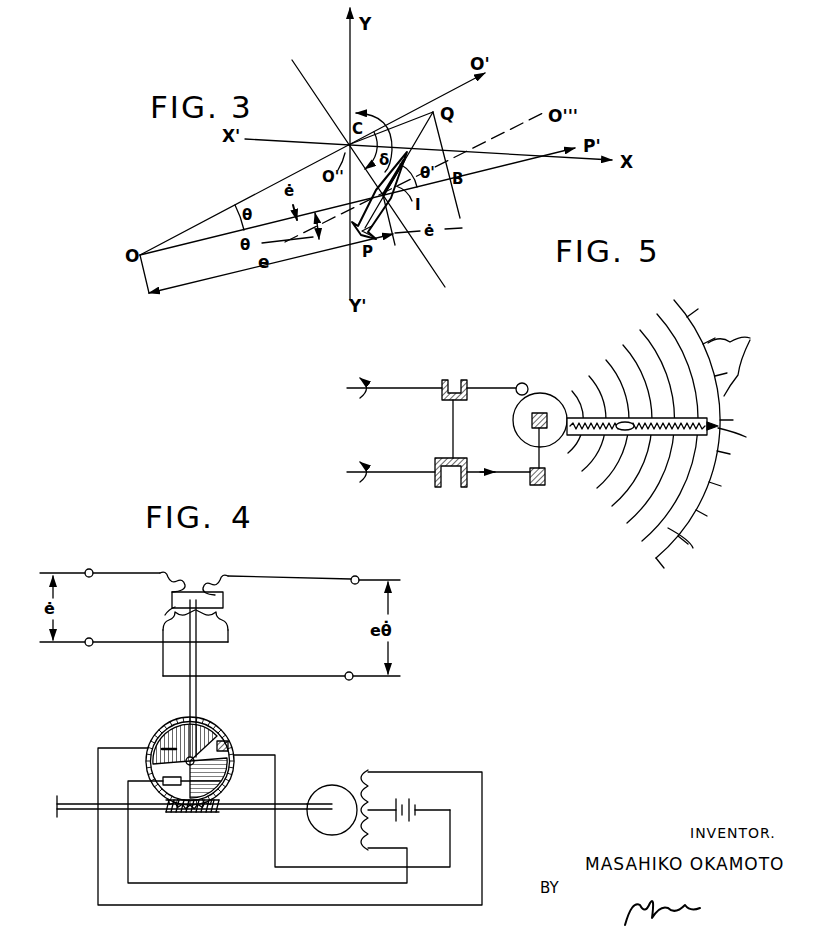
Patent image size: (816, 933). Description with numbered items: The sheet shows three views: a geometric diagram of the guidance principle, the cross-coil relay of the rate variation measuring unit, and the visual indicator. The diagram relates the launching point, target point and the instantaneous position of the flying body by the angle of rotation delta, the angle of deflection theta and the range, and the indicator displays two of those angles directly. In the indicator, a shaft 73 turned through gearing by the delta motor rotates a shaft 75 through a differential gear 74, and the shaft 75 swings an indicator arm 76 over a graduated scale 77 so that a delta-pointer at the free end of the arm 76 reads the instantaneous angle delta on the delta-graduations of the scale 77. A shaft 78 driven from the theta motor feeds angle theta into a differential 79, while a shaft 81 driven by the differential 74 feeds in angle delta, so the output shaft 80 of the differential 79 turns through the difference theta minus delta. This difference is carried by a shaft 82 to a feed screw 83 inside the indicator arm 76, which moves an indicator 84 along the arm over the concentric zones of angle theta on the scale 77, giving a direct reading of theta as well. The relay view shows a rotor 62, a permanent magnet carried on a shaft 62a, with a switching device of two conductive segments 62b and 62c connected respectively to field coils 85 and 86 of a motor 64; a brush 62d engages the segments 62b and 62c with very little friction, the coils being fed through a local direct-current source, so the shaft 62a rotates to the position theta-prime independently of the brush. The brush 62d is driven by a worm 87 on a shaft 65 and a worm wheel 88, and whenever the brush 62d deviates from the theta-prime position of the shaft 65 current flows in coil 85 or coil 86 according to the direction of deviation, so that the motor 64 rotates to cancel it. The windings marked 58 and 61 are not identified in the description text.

In FIG. 4, the coil 58 is at (168, 614).
In FIG. 4, the coil 61 is at (230, 622).
In FIG. 4, the rotor 62 is at (223, 605).
In FIG. 4, the shaft 62a is at (197, 690).
In FIG. 4, the conductive segment 62b is at (214, 741).
In FIG. 4, the conductive segment 62c is at (218, 785).
In FIG. 4, the brush 62d is at (228, 746).
In FIG. 4, the motor 64 is at (322, 792).
In FIG. 4, the shaft 65 is at (75, 802).
In FIG. 4, the field coil 85 is at (367, 770).
In FIG. 4, the field coil 86 is at (366, 842).
In FIG. 4, the worm 87 is at (188, 814).
In FIG. 4, the worm wheel 88 is at (161, 722).
In FIG. 5, the shaft 73 is at (411, 386).
In FIG. 5, the differential gear 74 is at (454, 380).
In FIG. 5, the shaft 75 is at (497, 386).
In FIG. 5, the indicator arm 76 is at (695, 416).
In FIG. 5, the graduated scale 77 is at (645, 488).
In FIG. 5, the shaft 78 is at (395, 474).
In FIG. 5, the differential 79 is at (452, 490).
In FIG. 5, the output shaft 80 is at (538, 488).
In FIG. 5, the shaft 81 is at (452, 428).
In FIG. 5, the shaft 82 is at (537, 456).
In FIG. 5, the feed screw 83 is at (568, 402).
In FIG. 5, the indicator 84 is at (626, 420).